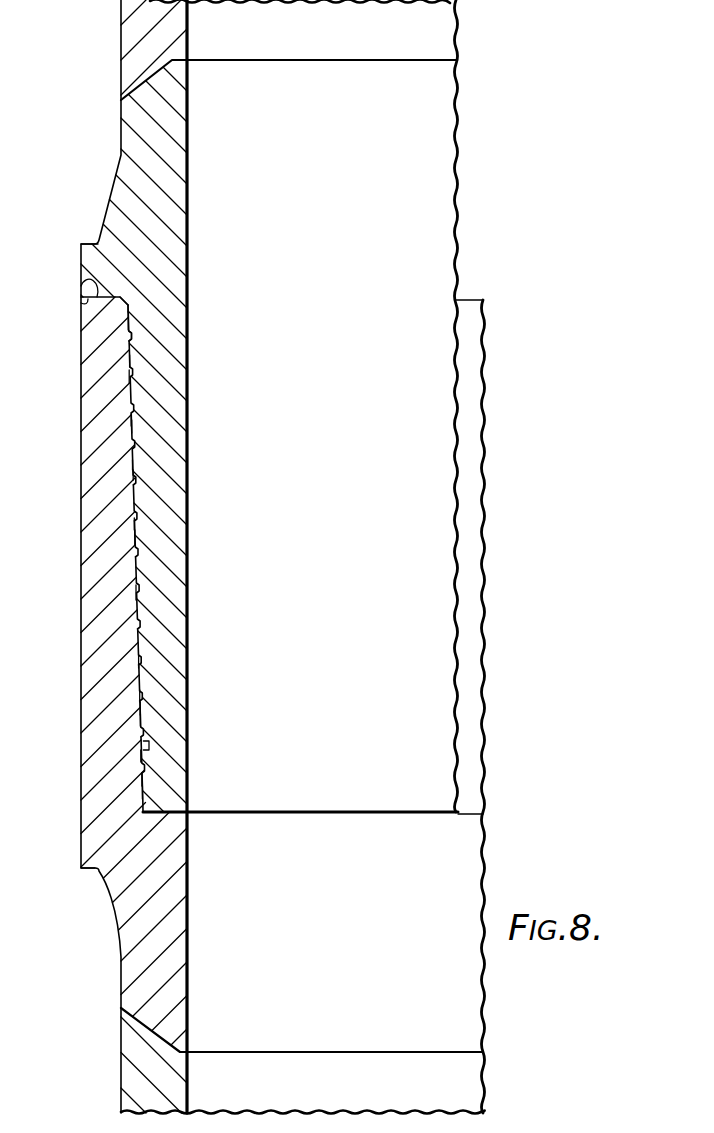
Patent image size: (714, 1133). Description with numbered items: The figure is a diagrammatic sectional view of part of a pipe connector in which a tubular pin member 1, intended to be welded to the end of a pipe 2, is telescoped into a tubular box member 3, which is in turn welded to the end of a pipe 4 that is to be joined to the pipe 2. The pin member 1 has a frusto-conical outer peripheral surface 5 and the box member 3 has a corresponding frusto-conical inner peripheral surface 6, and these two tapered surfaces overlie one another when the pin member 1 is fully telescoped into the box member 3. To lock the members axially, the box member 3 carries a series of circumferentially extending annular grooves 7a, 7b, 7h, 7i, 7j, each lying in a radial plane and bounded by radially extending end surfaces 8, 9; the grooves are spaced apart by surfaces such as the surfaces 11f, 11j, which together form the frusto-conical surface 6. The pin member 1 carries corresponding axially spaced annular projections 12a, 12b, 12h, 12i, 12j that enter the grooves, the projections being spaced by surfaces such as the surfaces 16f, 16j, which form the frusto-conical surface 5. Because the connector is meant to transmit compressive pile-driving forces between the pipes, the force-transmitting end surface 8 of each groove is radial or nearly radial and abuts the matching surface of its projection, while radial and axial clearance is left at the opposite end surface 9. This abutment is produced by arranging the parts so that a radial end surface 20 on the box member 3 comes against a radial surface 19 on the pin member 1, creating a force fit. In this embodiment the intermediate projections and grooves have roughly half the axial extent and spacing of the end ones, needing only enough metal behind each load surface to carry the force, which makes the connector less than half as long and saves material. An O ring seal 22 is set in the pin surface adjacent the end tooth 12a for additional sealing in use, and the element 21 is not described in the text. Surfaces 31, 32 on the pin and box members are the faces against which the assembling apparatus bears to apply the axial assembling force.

The tubular pin member 1 is at (170, 212).
The pipe 2 is at (128, 37).
The tubular box member 3 is at (101, 826).
The pipe 4 is at (133, 1075).
The frusto-conical outer peripheral surface 5 is at (130, 593).
The frusto-conical inner peripheral surface 6 is at (143, 665).
The annular groove 7a is at (140, 790).
The annular groove 7b is at (140, 700).
The annular groove 7h is at (131, 467).
The annular groove 7i is at (129, 425).
The annular groove 7j is at (127, 381).
The radially extending end surface 8 is at (140, 758).
The radially extending end surface 9 is at (140, 718).
The groove spacing surface 11f is at (135, 527).
The groove spacing surface 11j is at (130, 316).
The annular projection 12a is at (146, 779).
The annular projection 12b is at (143, 710).
The annular projection 12h is at (134, 473).
The annular projection 12i is at (131, 432).
The annular projection 12j is at (130, 366).
The projection spacing surface 16f is at (136, 538).
The projection spacing surface 16j is at (129, 311).
The radial surface 19 is at (83, 304).
The radial end surface 20 is at (82, 284).
The locking key 21 is at (133, 328).
The O ring seal 22 is at (152, 746).
The bearing surface 31 is at (90, 238).
The bearing surface 32 is at (93, 869).